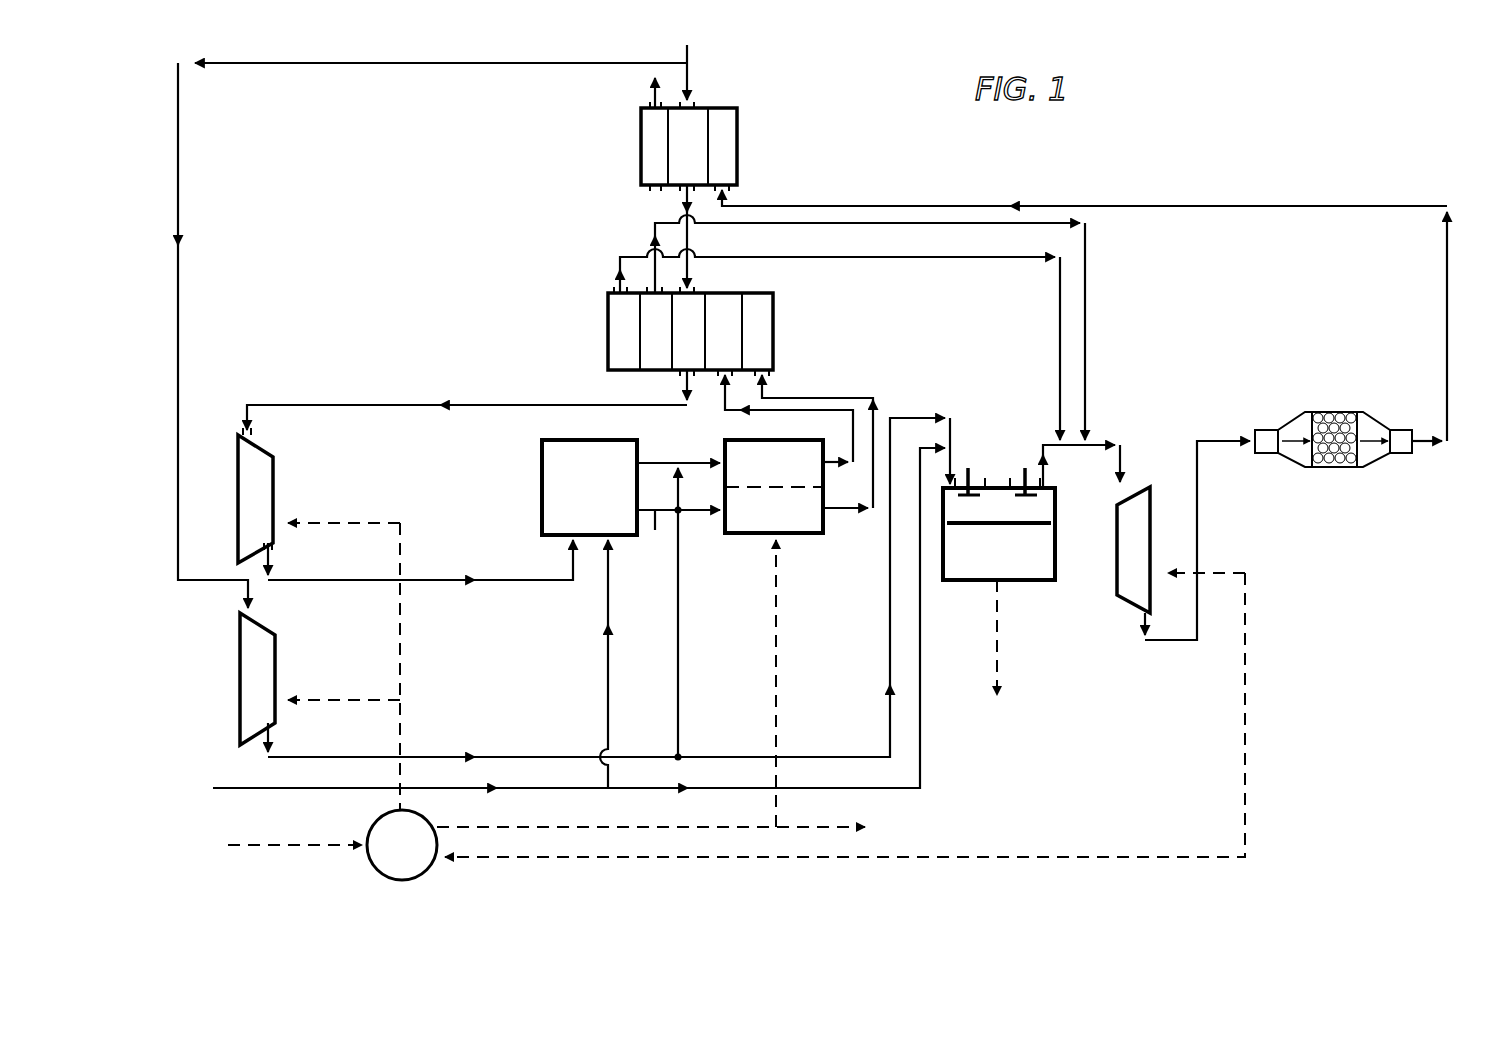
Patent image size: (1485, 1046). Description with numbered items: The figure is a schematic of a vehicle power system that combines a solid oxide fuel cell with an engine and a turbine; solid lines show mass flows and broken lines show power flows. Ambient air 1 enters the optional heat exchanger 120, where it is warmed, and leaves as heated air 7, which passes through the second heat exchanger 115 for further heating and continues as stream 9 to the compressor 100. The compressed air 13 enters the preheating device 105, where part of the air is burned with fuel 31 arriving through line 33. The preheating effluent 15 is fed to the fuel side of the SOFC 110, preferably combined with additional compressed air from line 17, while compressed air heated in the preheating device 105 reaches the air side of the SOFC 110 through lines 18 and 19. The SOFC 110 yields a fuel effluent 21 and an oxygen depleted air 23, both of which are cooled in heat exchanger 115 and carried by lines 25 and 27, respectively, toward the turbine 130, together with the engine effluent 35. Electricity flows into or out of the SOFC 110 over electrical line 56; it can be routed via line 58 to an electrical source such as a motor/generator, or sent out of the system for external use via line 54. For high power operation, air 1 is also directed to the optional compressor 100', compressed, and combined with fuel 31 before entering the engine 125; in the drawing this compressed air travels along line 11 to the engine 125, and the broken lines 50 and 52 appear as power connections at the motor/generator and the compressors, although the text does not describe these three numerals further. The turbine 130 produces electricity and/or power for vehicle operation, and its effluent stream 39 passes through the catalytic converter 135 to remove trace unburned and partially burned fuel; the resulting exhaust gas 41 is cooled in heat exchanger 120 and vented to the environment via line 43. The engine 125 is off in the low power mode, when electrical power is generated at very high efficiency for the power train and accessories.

The air 1 is at (690, 53).
The heated air 7 is at (692, 284).
The stream 9 is at (500, 403).
The compressed air line to engine 11 is at (917, 418).
The compressed air 13 is at (533, 578).
The preheating effluent 15 is at (668, 461).
The line 17 is at (673, 490).
The line 18 is at (656, 536).
The line 19 is at (700, 515).
The SOFC fuel effluent 21 is at (850, 443).
The oxygen depleted air 23 is at (842, 515).
The line 25 is at (835, 228).
The line 27 is at (820, 262).
The fuel 31 is at (928, 612).
The line 33 is at (600, 622).
The engine effluent 35 is at (1100, 445).
The turbine effluent stream 39 is at (1205, 512).
The exhaust gas 41 is at (1150, 204).
The line 43 is at (646, 86).
The electrical input line 50 is at (283, 845).
The mechanical drive line 52 is at (405, 731).
The line 54 is at (512, 827).
The electrical line 56 is at (785, 676).
The line 58 is at (1030, 853).
The compressor 100 is at (293, 495).
The optional compressor 100' is at (296, 679).
The preheating device 105 is at (589, 487).
The SOFC 110 is at (742, 540).
The second heat exchanger 115 is at (607, 331).
The optional heat exchanger 120 is at (638, 141).
The engine 125 is at (1009, 609).
The turbine 130 is at (1115, 590).
The catalytic converter 135 is at (1334, 410).